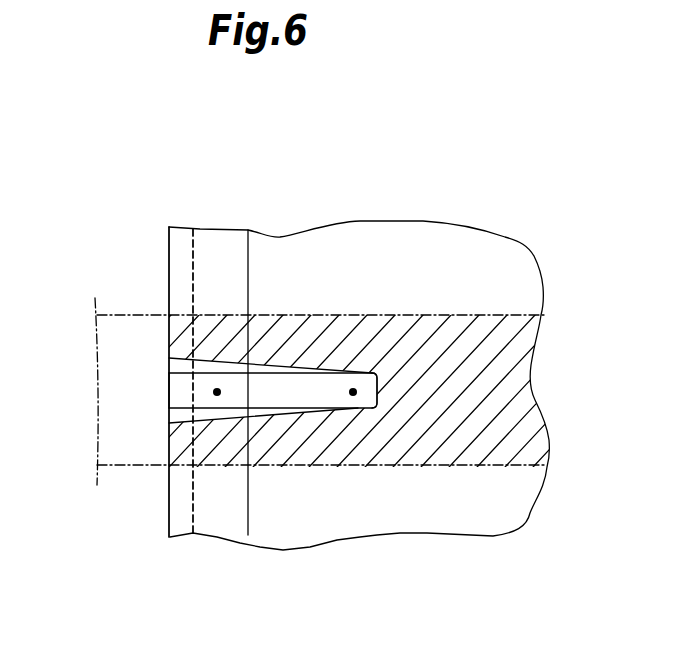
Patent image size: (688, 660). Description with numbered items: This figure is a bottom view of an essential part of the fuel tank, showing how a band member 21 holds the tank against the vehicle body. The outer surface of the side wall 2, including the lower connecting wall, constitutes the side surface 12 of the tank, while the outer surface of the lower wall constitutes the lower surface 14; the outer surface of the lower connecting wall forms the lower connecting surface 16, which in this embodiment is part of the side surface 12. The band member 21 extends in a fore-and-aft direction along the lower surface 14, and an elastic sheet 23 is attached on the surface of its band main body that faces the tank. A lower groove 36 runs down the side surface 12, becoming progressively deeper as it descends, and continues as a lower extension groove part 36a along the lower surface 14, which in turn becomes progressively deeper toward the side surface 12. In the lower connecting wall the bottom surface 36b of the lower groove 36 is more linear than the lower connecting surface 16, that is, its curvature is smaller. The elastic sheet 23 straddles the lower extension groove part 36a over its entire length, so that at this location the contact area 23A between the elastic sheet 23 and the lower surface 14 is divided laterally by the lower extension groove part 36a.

The side wall 2 is at (180, 247).
The side surface 12 is at (168, 280).
The lower surface 14 is at (435, 247).
The lower connecting surface 16 is at (218, 250).
The band member 21 is at (130, 315).
The elastic sheet 23 is at (485, 315).
The contact area 23A is at (283, 347).
The lower groove 36 is at (213, 392).
The lower extension groove part 36a is at (353, 396).
The bottom surface 36b is at (168, 397).